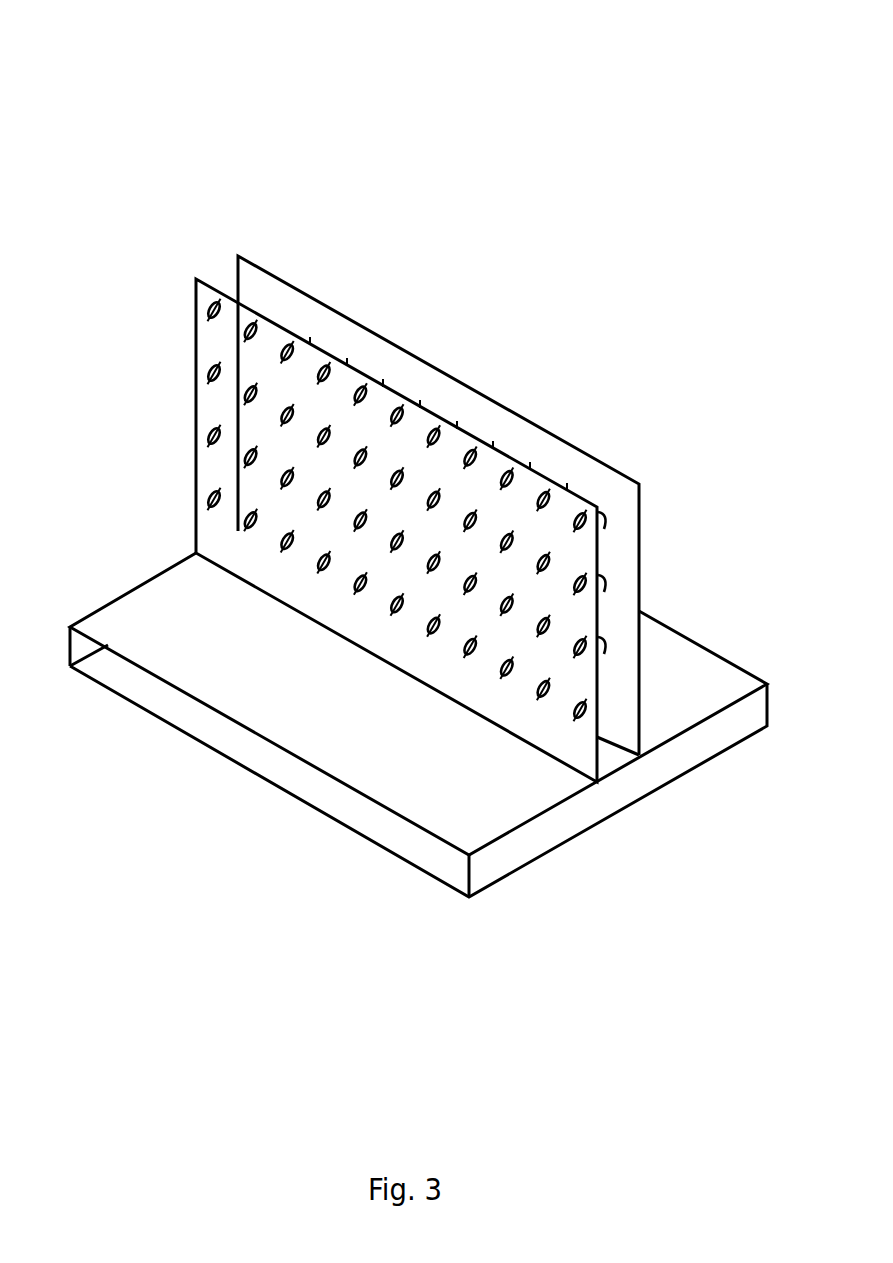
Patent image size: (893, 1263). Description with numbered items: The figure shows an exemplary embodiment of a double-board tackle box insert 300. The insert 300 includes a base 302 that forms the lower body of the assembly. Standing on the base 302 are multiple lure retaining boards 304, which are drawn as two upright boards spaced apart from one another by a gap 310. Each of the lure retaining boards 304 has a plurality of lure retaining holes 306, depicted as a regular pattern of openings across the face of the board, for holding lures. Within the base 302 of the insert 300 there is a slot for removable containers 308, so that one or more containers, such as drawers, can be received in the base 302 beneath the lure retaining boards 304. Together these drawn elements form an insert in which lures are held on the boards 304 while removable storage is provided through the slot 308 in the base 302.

The double-board tackle box insert 300 is at (392, 450).
The base 302 is at (130, 590).
The lure retaining boards 304 is at (192, 373).
The lure retaining holes 306 is at (470, 437).
The slot for removable containers 308 is at (182, 704).
The gap 310 is at (610, 757).